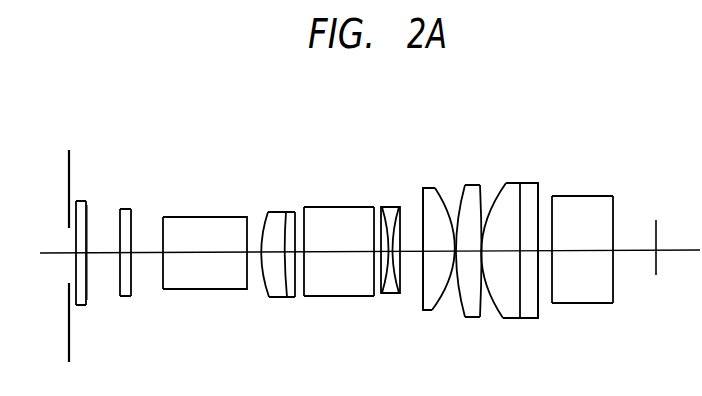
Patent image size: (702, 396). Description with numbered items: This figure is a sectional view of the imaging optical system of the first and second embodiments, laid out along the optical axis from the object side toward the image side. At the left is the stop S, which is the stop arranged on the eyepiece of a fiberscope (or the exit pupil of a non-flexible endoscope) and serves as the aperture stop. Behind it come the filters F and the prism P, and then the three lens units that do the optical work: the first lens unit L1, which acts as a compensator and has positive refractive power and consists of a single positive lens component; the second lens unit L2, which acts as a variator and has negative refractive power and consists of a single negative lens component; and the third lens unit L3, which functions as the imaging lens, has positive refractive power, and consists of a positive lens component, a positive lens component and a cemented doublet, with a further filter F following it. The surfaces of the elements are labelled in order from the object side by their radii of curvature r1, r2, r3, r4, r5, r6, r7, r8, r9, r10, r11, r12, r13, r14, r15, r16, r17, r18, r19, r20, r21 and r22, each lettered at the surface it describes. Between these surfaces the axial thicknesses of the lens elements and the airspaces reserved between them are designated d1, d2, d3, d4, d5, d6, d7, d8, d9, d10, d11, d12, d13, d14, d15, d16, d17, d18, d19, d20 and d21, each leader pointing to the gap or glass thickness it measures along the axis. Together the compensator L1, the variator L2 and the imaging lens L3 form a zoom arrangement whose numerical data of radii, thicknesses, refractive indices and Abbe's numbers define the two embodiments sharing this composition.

The stop S is at (68, 158).
The filter F is at (127, 209).
The prism P is at (200, 228).
The first lens unit L1 is at (285, 228).
The second lens unit L2 is at (392, 205).
The third lens unit L3 is at (550, 118).
The radius of curvature r1 is at (77, 200).
The radius of curvature r2 is at (81, 200).
The radius of curvature r3 is at (88, 226).
The radius of curvature r4 is at (123, 208).
The radius of curvature r5 is at (131, 223).
The radius of curvature r6 is at (164, 231).
The radius of curvature r7 is at (256, 223).
The radius of curvature r8 is at (281, 222).
The radius of curvature r9 is at (292, 218).
The radius of curvature r10 is at (313, 230).
The radius of curvature r11 is at (361, 228).
The radius of curvature r12 is at (383, 210).
The radius of curvature r13 is at (402, 210).
The radius of curvature r14 is at (423, 196).
The radius of curvature r15 is at (445, 212).
The radius of curvature r16 is at (459, 208).
The radius of curvature r17 is at (481, 217).
The radius of curvature r18 is at (494, 208).
The radius of curvature r19 is at (524, 210).
The radius of curvature r20 is at (541, 215).
The radius of curvature r21 is at (553, 220).
The radius of curvature r22 is at (614, 215).
The thickness or airspace d1 is at (72, 258).
The thickness or airspace d2 is at (83, 254).
The thickness or airspace d3 is at (108, 255).
The thickness or airspace d4 is at (124, 255).
The thickness or airspace d5 is at (153, 255).
The thickness or airspace d6 is at (185, 255).
The thickness or airspace d7 is at (257, 257).
The thickness or airspace d8 is at (282, 257).
The thickness or airspace d9 is at (308, 257).
The thickness or airspace d10 is at (348, 257).
The thickness or airspace d11 is at (377, 257).
The thickness or airspace d12 is at (388, 256).
The thickness or airspace d13 is at (413, 254).
The thickness or airspace d14 is at (432, 254).
The thickness or airspace d15 is at (456, 255).
The thickness or airspace d16 is at (470, 254).
The thickness or airspace d17 is at (489, 254).
The thickness or airspace d18 is at (512, 254).
The thickness or airspace d19 is at (526, 254).
The thickness or airspace d20 is at (547, 253).
The thickness or airspace d21 is at (590, 251).